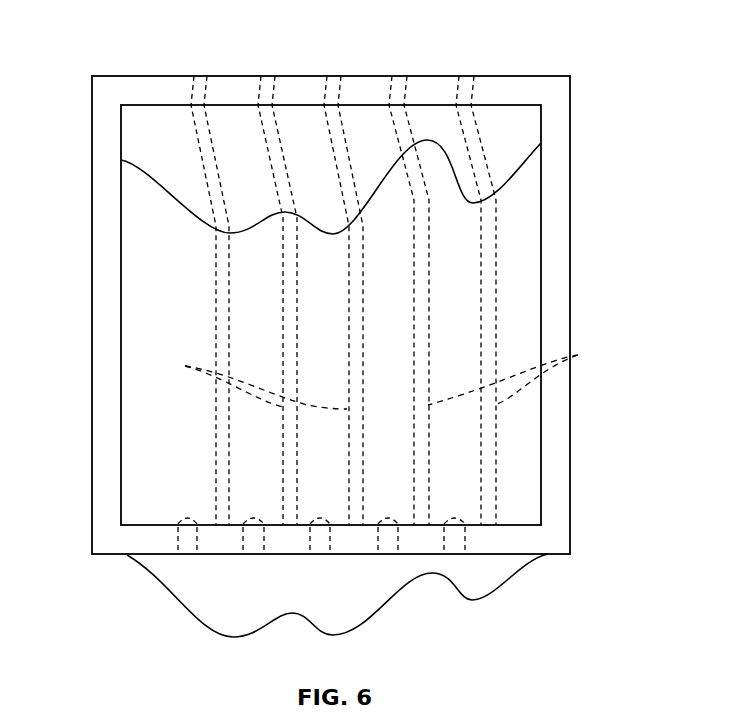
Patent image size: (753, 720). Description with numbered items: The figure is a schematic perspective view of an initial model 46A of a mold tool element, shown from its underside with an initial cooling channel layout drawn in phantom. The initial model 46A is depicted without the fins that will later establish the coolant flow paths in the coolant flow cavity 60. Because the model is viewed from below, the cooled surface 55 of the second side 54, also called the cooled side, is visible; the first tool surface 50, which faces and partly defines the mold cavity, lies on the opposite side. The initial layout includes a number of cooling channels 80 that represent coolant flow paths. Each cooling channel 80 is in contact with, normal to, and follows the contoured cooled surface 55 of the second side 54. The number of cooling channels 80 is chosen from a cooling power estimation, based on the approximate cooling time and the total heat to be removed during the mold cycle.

The initial model 46A is at (598, 41).
The first tool surface 50 is at (178, 613).
The second side 54 is at (145, 226).
The cooled surface 55 is at (161, 307).
The coolant flow cavity 60 is at (453, 362).
The cooling channels 80 is at (185, 366).